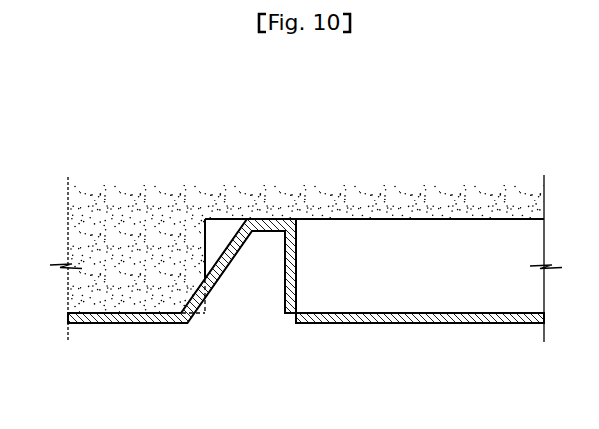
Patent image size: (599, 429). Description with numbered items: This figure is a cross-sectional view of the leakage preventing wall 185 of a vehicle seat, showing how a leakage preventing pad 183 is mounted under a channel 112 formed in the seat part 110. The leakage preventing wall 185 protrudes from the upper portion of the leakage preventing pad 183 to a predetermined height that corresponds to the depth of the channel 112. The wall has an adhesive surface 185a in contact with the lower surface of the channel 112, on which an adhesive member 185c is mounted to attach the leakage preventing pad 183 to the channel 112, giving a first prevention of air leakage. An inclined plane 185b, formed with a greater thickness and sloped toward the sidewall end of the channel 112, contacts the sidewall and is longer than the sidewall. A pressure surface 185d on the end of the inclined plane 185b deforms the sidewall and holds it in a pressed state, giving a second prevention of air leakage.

The seat part 110 is at (383, 197).
The channel 112 is at (480, 233).
The leakage preventing pad 183 is at (410, 315).
The leakage preventing wall 185 is at (318, 142).
The adhesive surface 185a is at (252, 220).
The inclined plane 185b is at (222, 243).
The adhesive member 185c is at (285, 220).
The pressure surface 185d is at (203, 313).